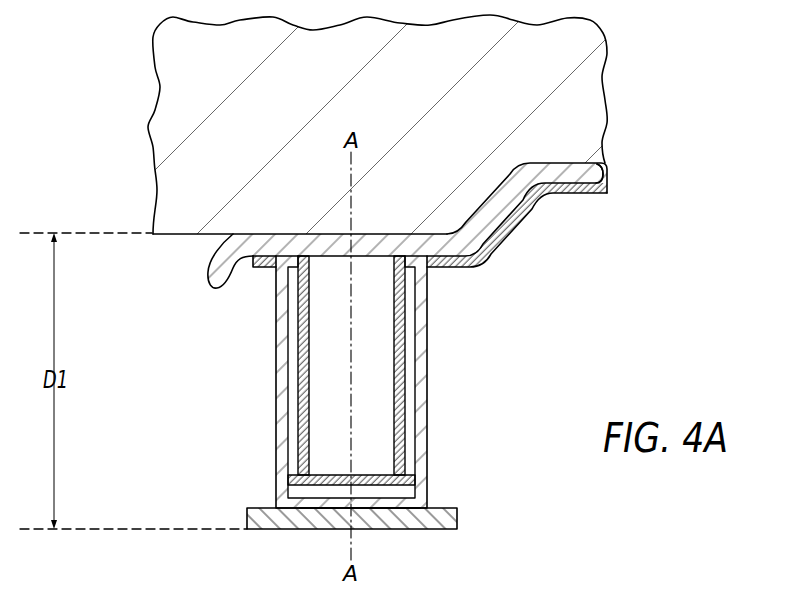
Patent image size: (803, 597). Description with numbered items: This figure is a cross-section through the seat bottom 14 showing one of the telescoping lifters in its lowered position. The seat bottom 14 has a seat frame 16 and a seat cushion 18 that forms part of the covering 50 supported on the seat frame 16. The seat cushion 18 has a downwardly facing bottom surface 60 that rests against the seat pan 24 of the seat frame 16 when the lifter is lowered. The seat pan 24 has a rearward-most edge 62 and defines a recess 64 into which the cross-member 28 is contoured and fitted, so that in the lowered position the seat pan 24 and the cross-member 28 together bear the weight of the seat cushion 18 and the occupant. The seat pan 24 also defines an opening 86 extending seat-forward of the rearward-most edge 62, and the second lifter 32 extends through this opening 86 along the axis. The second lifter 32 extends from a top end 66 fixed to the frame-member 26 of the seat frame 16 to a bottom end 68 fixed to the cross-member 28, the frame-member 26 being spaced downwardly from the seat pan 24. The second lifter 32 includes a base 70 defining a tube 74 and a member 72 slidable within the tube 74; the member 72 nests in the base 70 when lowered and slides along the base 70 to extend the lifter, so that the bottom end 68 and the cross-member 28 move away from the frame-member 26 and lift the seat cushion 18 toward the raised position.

The seat bottom 14 is at (185, 315).
The seat frame 16 is at (490, 259).
The seat cushion 18 is at (170, 122).
The seat pan 24 is at (543, 188).
The frame-member 26 is at (293, 529).
The cross-member 28 is at (260, 238).
The second lifter 32 is at (233, 398).
The covering 50 is at (202, 243).
The bottom surface 60 is at (178, 235).
The rearward-most edge 62 is at (243, 263).
The recess 64 is at (446, 216).
The top end 66 is at (397, 257).
The bottom end 68 is at (383, 508).
The base 70 is at (277, 453).
The member 72 is at (407, 423).
The tube 74 is at (303, 492).
The opening 86 is at (283, 258).